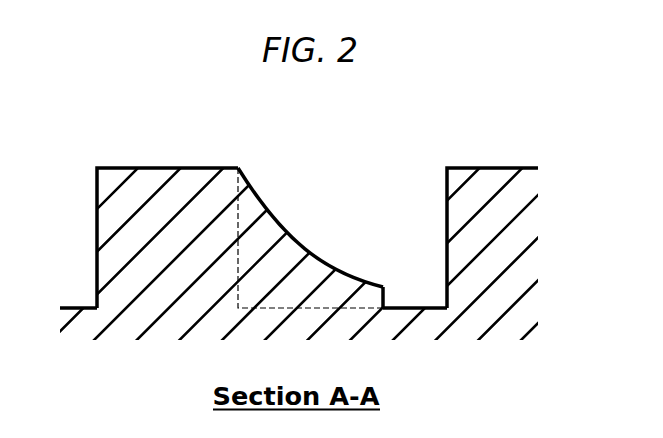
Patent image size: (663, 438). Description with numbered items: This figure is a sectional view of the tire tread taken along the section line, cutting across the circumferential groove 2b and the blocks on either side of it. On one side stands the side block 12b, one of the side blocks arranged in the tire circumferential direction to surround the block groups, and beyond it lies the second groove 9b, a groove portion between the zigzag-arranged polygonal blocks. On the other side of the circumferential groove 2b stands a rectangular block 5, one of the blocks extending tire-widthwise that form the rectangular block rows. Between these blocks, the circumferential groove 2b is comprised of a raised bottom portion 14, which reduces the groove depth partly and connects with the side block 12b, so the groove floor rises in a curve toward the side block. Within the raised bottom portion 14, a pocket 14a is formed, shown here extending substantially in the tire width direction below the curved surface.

The side block 12b is at (171, 167).
The raised bottom portion 14 is at (277, 216).
The pocket 14a is at (326, 304).
The circumferential groove 2b is at (389, 232).
The second groove 9b is at (75, 247).
The rectangular block 5 is at (496, 167).